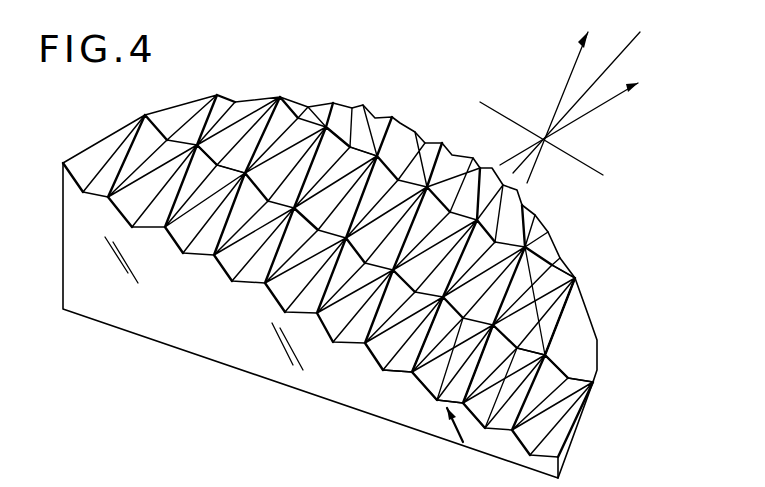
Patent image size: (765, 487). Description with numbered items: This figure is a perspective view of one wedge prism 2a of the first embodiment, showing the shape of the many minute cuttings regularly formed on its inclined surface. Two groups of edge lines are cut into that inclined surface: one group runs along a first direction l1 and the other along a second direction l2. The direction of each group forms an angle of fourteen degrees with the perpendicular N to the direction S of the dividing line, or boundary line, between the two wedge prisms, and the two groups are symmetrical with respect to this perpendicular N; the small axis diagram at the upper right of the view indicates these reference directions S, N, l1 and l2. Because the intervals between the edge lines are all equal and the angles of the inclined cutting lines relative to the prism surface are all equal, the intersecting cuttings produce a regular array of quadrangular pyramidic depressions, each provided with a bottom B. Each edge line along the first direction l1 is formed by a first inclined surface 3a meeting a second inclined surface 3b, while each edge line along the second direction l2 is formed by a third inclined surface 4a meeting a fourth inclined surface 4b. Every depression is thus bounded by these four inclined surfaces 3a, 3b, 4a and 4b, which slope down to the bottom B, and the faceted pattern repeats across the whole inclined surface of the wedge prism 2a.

The wedge prism 2a is at (72, 268).
The first inclined surface 3a is at (497, 400).
The second inclined surface 3b is at (478, 397).
The third inclined surface 4a is at (392, 385).
The fourth inclined surface 4b is at (433, 407).
The bottom B is at (350, 147).
The perpendicular N is at (481, 246).
The direction of the dividing line S is at (555, 149).
The first direction l1 is at (594, 115).
The second direction l2 is at (562, 93).